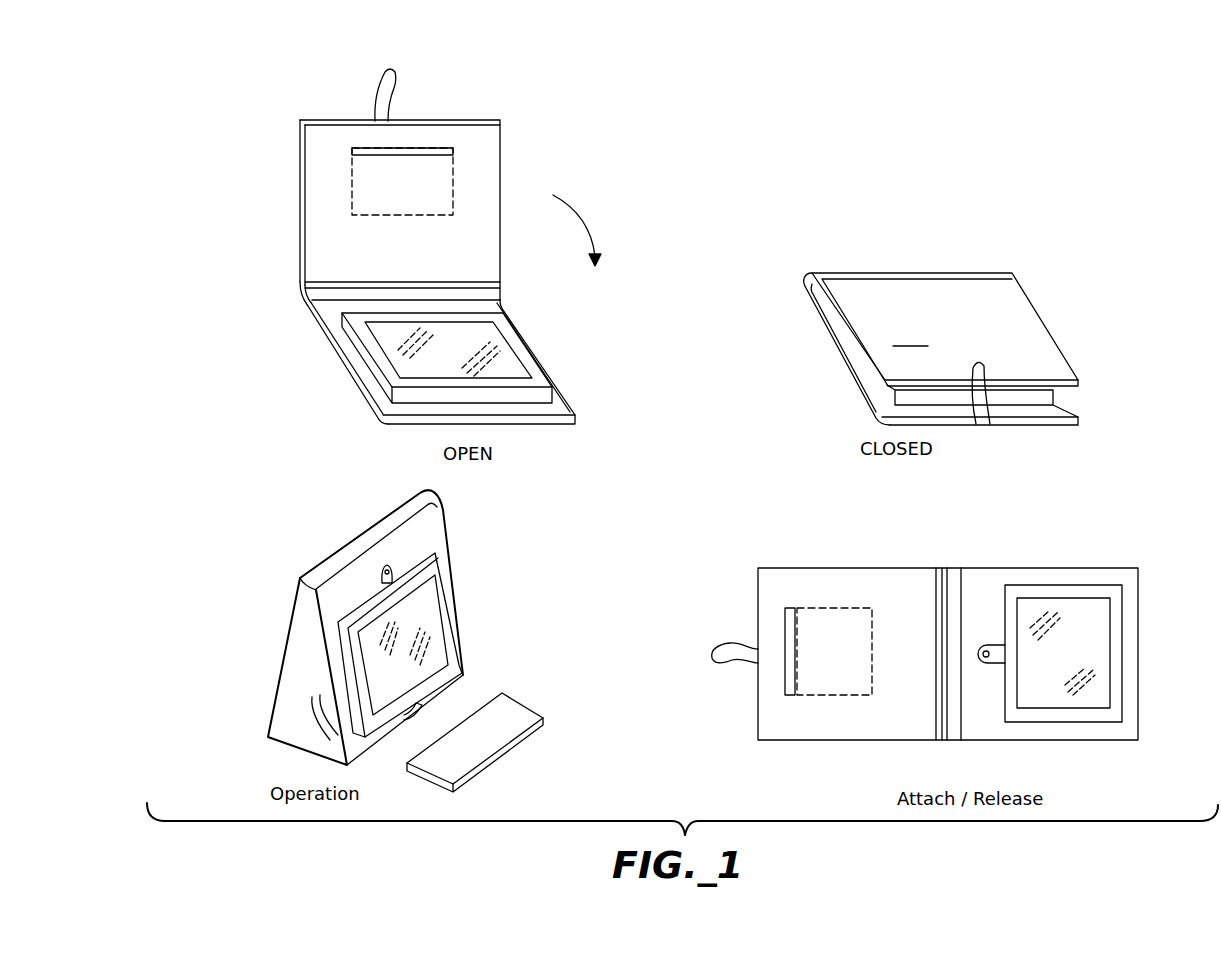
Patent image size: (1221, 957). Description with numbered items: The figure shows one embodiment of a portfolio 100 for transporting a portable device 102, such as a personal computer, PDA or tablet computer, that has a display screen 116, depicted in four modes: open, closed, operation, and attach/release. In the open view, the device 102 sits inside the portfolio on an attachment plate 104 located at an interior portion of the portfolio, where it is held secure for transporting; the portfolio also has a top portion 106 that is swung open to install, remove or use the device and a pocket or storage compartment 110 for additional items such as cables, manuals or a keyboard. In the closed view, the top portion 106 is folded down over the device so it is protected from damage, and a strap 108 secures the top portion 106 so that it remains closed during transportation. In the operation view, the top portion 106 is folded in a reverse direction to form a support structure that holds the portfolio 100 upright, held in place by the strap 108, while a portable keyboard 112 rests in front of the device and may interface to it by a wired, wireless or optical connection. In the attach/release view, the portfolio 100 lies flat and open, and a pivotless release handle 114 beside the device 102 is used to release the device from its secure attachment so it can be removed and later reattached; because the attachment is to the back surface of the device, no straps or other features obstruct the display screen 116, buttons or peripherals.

The portfolio 100 is at (255, 157).
The portable device 102 is at (368, 362).
The attachment plate 104 is at (558, 408).
The top portion 106 is at (490, 178).
The strap 108 is at (392, 98).
The pocket 110 is at (352, 185).
The portable keyboard 112 is at (520, 712).
The pivotless release handle 114 is at (386, 566).
The display screen 116 is at (496, 345).